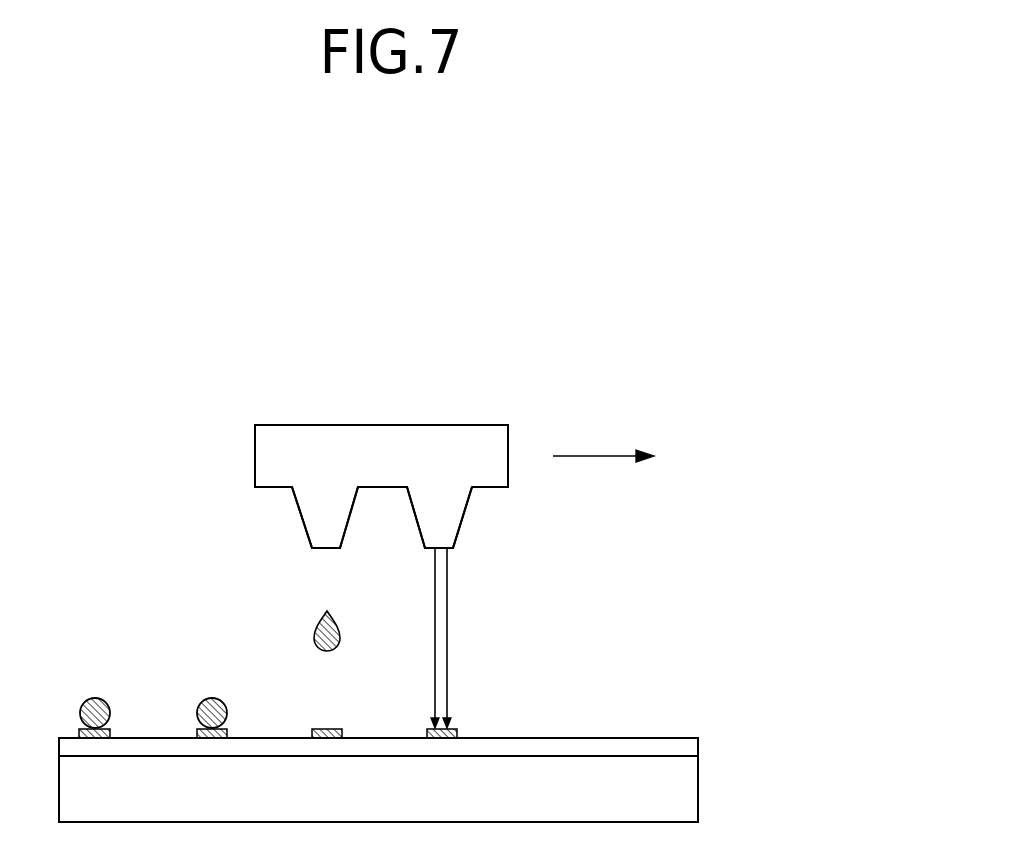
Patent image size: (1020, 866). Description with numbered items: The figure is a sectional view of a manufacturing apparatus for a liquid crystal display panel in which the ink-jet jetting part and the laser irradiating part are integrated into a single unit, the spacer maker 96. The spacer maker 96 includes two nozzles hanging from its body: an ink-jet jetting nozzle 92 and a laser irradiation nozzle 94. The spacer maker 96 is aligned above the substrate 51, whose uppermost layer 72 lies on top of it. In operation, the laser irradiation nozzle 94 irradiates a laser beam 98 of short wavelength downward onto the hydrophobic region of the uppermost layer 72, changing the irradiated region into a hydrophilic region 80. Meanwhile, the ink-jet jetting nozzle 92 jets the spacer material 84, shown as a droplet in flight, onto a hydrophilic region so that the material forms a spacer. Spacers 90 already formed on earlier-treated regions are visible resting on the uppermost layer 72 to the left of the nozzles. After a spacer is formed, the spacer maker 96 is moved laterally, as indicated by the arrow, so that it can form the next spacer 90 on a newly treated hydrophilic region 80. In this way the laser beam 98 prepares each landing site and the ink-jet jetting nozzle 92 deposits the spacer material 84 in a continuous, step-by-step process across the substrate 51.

The spacer maker 96 is at (469, 424).
The ink-jet jetting nozzle 92 is at (301, 522).
The laser irradiation nozzle 94 is at (462, 517).
The laser beam 98 is at (448, 636).
The spacer material 84 is at (312, 637).
The hydrophilic region 80 is at (458, 732).
The spacer 90 is at (201, 701).
The uppermost layer 72 is at (700, 745).
The substrate 51 is at (700, 788).